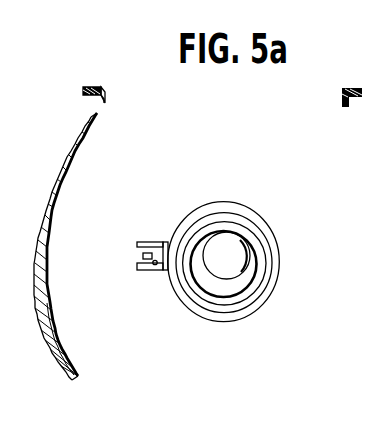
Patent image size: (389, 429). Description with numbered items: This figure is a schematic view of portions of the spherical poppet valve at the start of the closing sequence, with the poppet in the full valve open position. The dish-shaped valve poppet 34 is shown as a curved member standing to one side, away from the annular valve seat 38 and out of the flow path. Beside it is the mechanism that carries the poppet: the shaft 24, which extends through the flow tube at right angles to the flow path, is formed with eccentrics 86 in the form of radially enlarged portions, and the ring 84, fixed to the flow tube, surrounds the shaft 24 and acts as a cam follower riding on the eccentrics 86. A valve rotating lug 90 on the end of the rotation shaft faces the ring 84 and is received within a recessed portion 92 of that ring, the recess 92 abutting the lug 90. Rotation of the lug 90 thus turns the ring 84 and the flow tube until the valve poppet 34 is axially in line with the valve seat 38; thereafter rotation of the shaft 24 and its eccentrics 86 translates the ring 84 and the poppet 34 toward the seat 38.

The shaft 24 is at (236, 264).
The valve poppet 34 is at (63, 170).
The valve seat 38 is at (102, 87).
The ring 84 is at (202, 208).
The eccentrics 86 is at (207, 272).
The valve rotating lug 90 is at (143, 256).
The recessed portion 92 is at (154, 265).